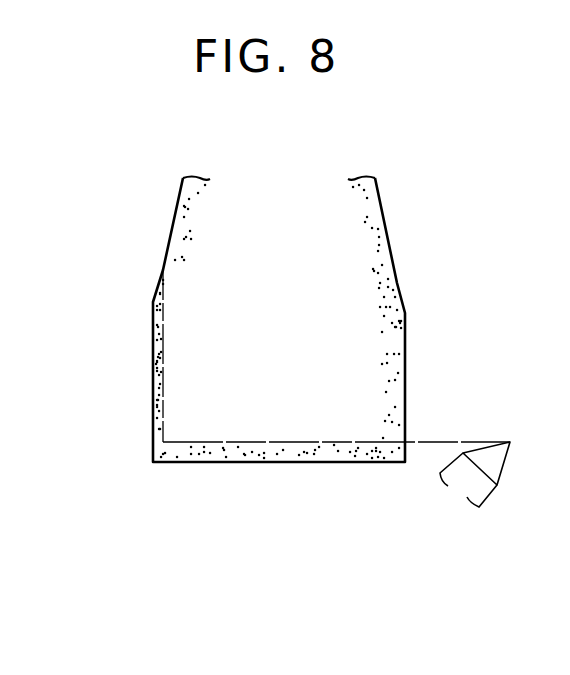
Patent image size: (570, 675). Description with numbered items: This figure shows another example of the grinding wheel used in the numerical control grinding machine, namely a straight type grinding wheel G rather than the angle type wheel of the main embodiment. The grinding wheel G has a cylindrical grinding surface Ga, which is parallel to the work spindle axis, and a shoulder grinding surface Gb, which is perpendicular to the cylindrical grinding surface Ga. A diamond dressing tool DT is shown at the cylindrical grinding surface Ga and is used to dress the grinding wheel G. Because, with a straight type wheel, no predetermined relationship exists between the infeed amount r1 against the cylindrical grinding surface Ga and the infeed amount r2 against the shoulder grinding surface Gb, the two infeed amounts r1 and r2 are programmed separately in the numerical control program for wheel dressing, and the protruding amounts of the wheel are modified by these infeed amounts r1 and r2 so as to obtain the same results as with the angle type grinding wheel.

The grinding wheel G is at (385, 273).
The shoulder grinding surface Gb is at (152, 325).
The cylindrical grinding surface Ga is at (269, 462).
The infeed amount against the cylindrical grinding surface r1 is at (330, 463).
The infeed amount against the shoulder grinding surface r2 is at (165, 376).
The diamond dressing tool DT is at (485, 497).